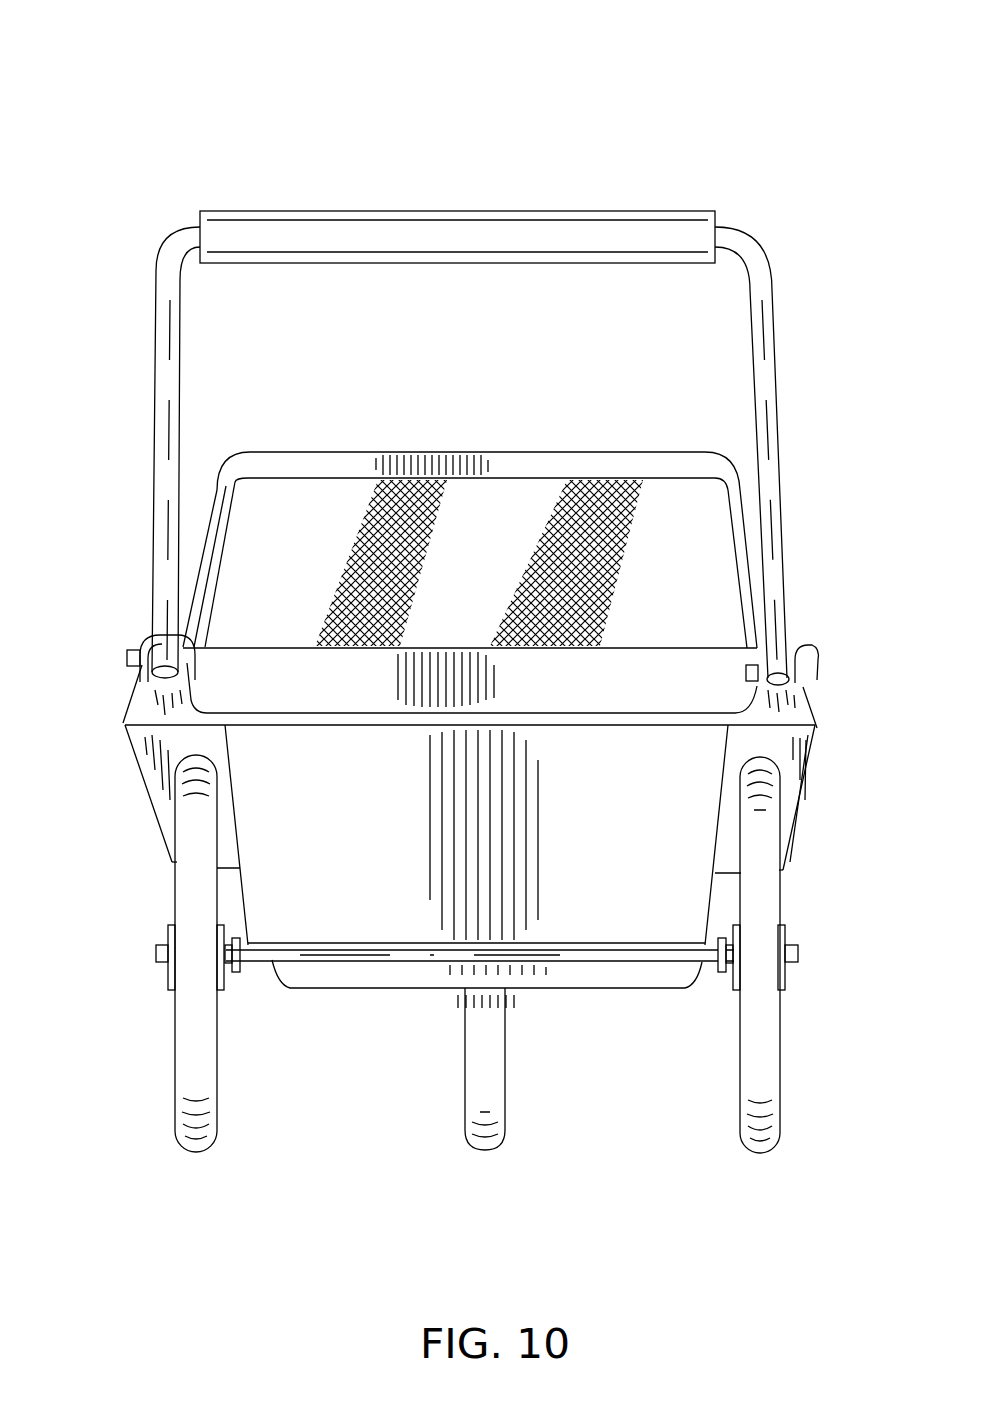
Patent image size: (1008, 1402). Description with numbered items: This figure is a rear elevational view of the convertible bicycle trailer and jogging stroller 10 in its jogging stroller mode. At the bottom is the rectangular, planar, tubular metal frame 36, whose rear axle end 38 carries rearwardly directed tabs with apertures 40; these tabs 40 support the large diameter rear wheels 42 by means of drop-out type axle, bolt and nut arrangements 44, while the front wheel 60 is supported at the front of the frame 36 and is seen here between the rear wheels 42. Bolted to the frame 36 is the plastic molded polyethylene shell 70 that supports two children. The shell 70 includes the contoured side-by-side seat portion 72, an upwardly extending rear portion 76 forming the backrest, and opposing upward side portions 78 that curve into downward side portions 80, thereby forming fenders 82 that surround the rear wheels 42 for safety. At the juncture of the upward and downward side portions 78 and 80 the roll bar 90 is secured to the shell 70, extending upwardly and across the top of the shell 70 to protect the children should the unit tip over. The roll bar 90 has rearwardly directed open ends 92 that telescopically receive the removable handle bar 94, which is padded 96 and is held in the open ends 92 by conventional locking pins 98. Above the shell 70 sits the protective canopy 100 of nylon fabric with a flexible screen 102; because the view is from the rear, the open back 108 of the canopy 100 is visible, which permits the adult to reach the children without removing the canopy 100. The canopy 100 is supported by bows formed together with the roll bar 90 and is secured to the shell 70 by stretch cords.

The convertible bicycle trailer and jogging stroller 10 is at (396, 105).
The padding 96 is at (282, 210).
The handle bar 94 is at (160, 388).
The protective canopy 100 is at (272, 470).
The roll bar 90 is at (215, 564).
The open back 108 is at (503, 480).
The flexible screen 102 is at (650, 512).
The locking pins 98 is at (150, 638).
The open ends 92 is at (128, 664).
The fenders 82 is at (815, 745).
The shell 70 is at (270, 780).
The upwardly extending rear portion 76 is at (275, 830).
The upward side portion 78 is at (720, 835).
The downward side portion 80 is at (808, 775).
The seat portion 72 is at (388, 926).
The frame 36 is at (285, 963).
The rear axle end 38 is at (286, 962).
The tabs with apertures 40 is at (234, 990).
The axle, bolt and nut arrangements 44 is at (158, 956).
The rear wheels 42 is at (185, 1092).
The front wheel 60 is at (470, 1105).